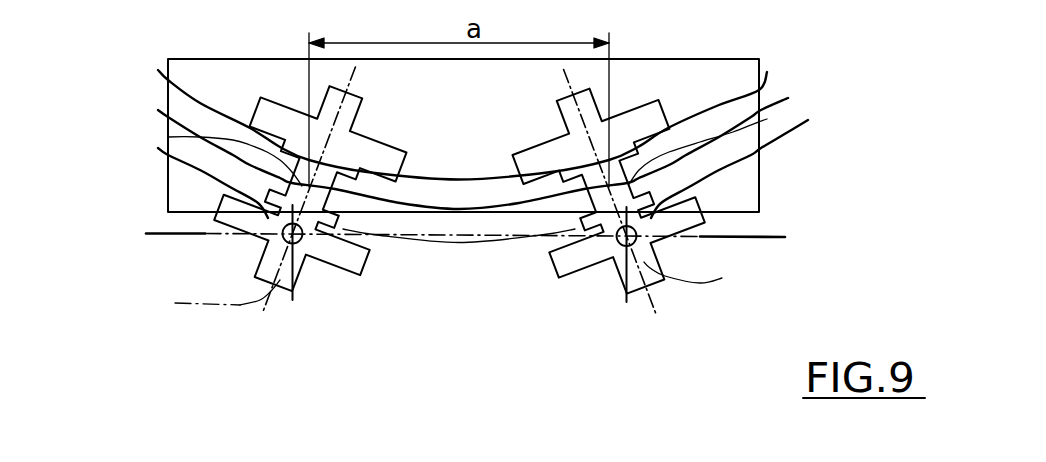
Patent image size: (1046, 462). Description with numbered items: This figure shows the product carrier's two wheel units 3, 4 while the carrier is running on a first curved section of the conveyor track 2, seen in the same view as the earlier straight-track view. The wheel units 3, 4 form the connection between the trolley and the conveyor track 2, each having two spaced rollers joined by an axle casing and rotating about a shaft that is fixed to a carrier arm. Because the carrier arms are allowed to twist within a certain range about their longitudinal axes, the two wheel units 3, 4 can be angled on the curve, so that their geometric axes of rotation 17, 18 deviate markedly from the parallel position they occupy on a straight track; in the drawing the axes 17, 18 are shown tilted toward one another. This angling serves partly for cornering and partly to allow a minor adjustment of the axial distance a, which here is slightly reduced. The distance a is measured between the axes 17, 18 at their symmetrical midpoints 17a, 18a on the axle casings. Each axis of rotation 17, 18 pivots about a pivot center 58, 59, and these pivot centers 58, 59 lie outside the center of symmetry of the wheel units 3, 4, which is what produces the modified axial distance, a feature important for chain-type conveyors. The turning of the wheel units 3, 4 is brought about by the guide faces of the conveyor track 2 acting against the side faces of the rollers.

The conveyor track 2 is at (759, 90).
The first wheel unit 3 is at (326, 287).
The second wheel unit 4 is at (593, 287).
The axis of rotation of the first wheel unit 17 is at (175, 303).
The symmetrical midpoint of the first axis of rotation 17a is at (168, 137).
The axis of rotation of the second wheel unit 18 is at (722, 278).
The symmetrical midpoint of the second axis of rotation 18a is at (767, 119).
The pivot center for the first axis of rotation 58 is at (284, 236).
The pivot center for the second axis of rotation 59 is at (640, 233).